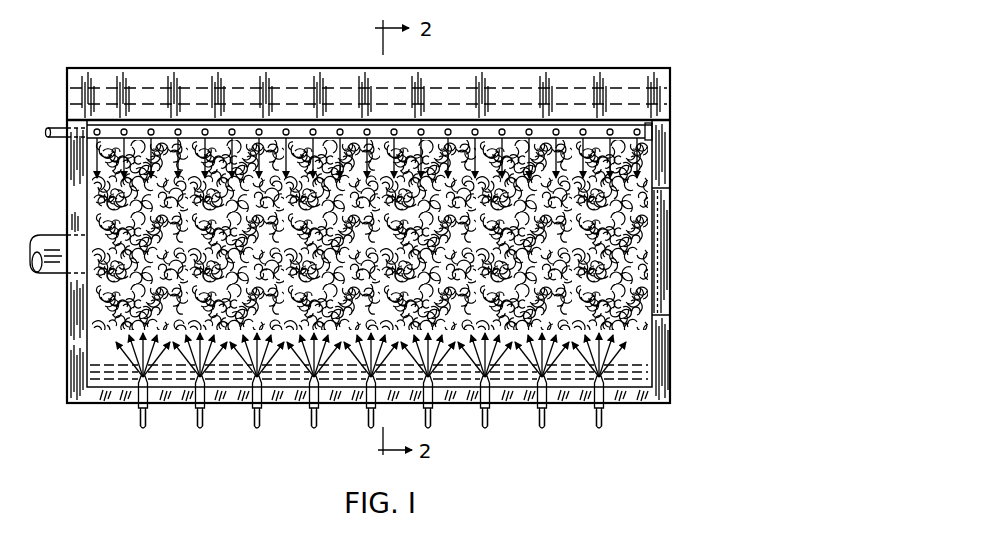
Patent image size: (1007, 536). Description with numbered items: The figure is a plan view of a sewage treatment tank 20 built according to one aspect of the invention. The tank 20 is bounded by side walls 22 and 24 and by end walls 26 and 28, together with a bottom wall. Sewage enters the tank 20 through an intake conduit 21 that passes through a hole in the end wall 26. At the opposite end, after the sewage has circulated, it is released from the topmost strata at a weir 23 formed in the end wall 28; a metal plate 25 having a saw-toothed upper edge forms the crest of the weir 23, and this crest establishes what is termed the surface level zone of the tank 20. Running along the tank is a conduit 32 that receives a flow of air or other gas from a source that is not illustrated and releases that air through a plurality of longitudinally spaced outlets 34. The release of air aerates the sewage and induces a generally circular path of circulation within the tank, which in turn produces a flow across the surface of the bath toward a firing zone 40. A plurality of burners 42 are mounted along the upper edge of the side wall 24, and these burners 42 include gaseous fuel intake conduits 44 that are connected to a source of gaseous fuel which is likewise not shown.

The tank 20 is at (673, 127).
The intake conduit 21 is at (53, 235).
The side wall 22 is at (517, 82).
The weir 23 is at (661, 222).
The side wall 24 is at (625, 395).
The metal plate 25 is at (661, 258).
The end wall 26 is at (72, 322).
The end wall 28 is at (665, 348).
The conduit 32 is at (60, 128).
The outlets 34 is at (233, 130).
The firing zone 40 is at (196, 330).
The burners 42 is at (139, 407).
The gaseous fuel intake conduits 44 is at (148, 410).